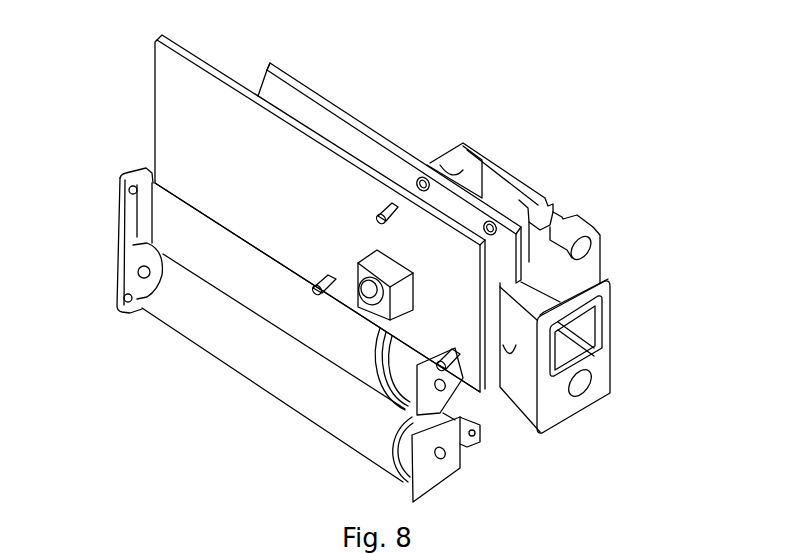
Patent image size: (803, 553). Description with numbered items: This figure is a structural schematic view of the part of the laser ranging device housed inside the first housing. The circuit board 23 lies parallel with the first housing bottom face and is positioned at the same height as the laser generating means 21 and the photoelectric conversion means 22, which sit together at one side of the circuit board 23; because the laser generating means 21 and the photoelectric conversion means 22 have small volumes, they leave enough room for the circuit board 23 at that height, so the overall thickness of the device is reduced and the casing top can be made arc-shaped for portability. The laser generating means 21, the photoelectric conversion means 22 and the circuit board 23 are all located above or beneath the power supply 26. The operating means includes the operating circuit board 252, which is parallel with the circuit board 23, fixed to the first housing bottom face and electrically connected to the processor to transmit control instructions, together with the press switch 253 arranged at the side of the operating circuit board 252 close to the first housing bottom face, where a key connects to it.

The operating circuit board 252 is at (170, 110).
The circuit board 23 is at (340, 100).
The power supply 26 is at (163, 300).
The press switch 253 is at (360, 308).
The photoelectric conversion means 22 is at (603, 317).
The laser generating means 21 is at (590, 395).